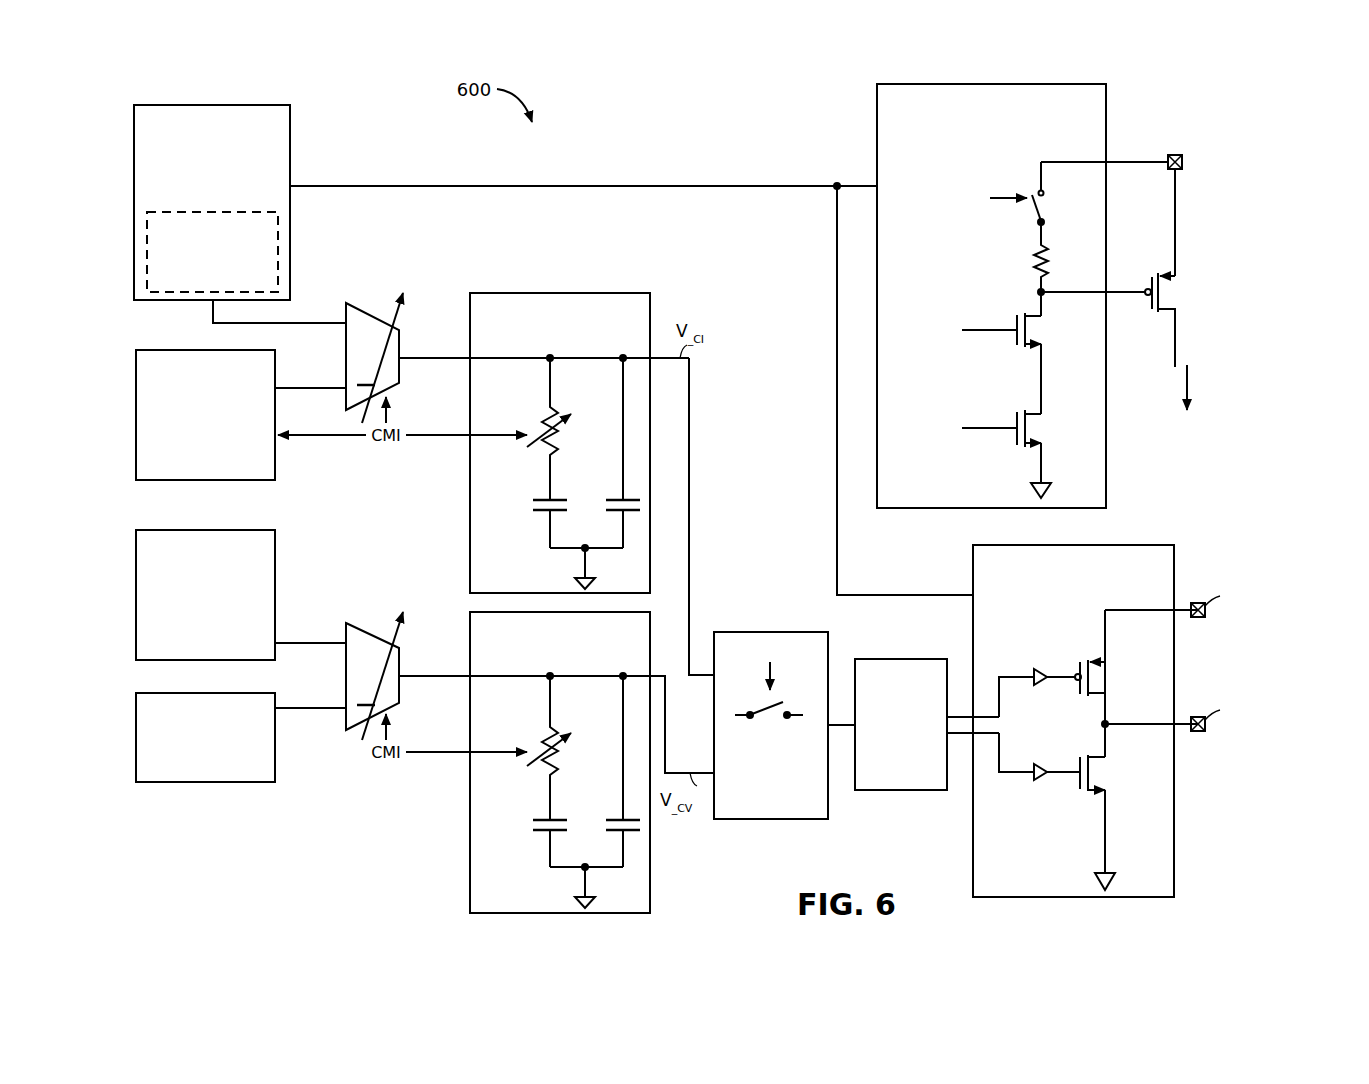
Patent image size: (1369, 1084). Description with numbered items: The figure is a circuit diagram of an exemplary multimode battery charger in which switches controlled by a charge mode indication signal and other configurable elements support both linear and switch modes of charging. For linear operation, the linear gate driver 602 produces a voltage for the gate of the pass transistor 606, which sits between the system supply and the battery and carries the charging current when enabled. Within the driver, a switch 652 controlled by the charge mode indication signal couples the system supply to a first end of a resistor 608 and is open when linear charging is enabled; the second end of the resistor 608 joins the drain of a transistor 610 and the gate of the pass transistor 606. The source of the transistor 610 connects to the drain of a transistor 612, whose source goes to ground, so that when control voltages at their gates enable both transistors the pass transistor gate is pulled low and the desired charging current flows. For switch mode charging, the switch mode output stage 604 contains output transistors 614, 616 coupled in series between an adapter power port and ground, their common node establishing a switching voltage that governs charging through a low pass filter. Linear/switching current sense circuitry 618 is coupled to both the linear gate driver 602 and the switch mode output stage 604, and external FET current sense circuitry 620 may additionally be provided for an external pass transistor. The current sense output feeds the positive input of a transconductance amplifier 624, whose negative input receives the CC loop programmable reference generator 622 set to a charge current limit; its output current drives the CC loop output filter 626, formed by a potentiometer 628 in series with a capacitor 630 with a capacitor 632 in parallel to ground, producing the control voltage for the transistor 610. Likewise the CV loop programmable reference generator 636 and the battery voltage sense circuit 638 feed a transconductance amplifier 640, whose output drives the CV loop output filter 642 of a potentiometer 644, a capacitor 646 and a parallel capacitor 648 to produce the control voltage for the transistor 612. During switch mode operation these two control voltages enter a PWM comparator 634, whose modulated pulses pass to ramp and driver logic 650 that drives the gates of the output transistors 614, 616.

The linear gate driver 602 is at (1022, 296).
The switch mode output stage 604 is at (1127, 721).
The pass transistor 606 is at (1163, 292).
The resistor 608 is at (1033, 280).
The transistor 610 is at (1030, 330).
The transistor 612 is at (1030, 428).
The output transistor 614 is at (1093, 677).
The output transistor 616 is at (1093, 772).
The linear/switching current sense circuitry 618 is at (212, 202).
The external FET current sense circuitry 620 is at (212, 252).
The CC loop programmable reference generator 622 is at (205, 415).
The transconductance amplifier 624 is at (364, 307).
The CC loop output filter 626 is at (544, 443).
The variable resistor or potentiometer 628 is at (541, 450).
The capacitor 630 is at (540, 514).
The capacitor 632 is at (614, 500).
The PWM comparator 634 is at (771, 725).
The CV loop programmable reference generator 636 is at (205, 595).
The battery voltage sense circuit 638 is at (205, 737).
The transconductance amplifier 640 is at (364, 627).
The CV loop output filter 642 is at (556, 762).
The variable resistor or potentiometer 644 is at (541, 769).
The capacitor 646 is at (540, 834).
The capacitor 648 is at (614, 820).
The ramp and driver logic 650 is at (901, 724).
The switch 652 is at (1046, 215).